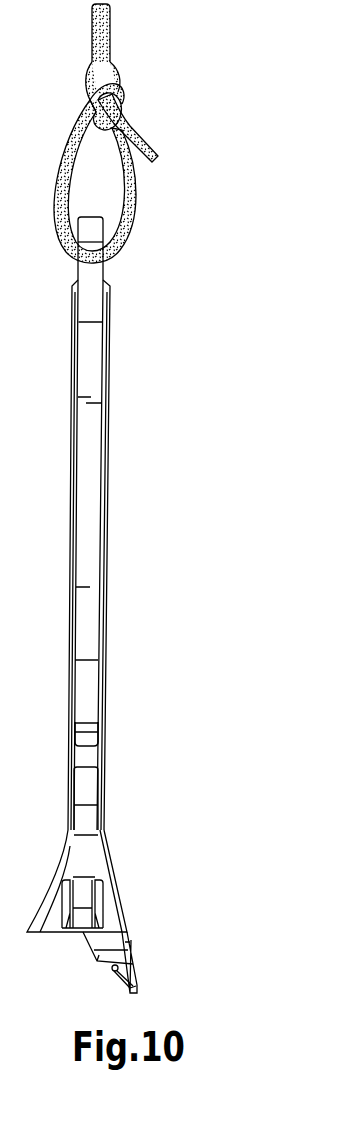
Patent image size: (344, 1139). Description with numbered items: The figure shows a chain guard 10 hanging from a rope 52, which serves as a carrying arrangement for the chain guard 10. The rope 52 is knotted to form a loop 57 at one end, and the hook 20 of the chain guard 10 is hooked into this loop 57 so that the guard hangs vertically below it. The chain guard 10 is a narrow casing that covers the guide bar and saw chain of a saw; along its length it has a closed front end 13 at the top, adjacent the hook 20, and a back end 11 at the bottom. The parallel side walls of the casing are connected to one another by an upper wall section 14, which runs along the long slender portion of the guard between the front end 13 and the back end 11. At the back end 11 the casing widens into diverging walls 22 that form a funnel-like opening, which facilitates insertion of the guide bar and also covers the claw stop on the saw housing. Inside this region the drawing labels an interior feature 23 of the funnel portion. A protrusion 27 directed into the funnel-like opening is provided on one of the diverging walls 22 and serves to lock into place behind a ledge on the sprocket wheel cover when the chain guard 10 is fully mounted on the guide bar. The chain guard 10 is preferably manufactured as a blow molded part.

The chain guard 10 is at (101, 575).
The back end 11 is at (113, 898).
The front end 13 is at (83, 575).
The upper wall section 14 is at (88, 535).
The hook 20 is at (92, 270).
The diverging wall 22 is at (48, 886).
The socket channel 23 is at (88, 858).
The protrusion 27 is at (112, 972).
The rope 52 is at (102, 33).
The loop 57 is at (135, 208).